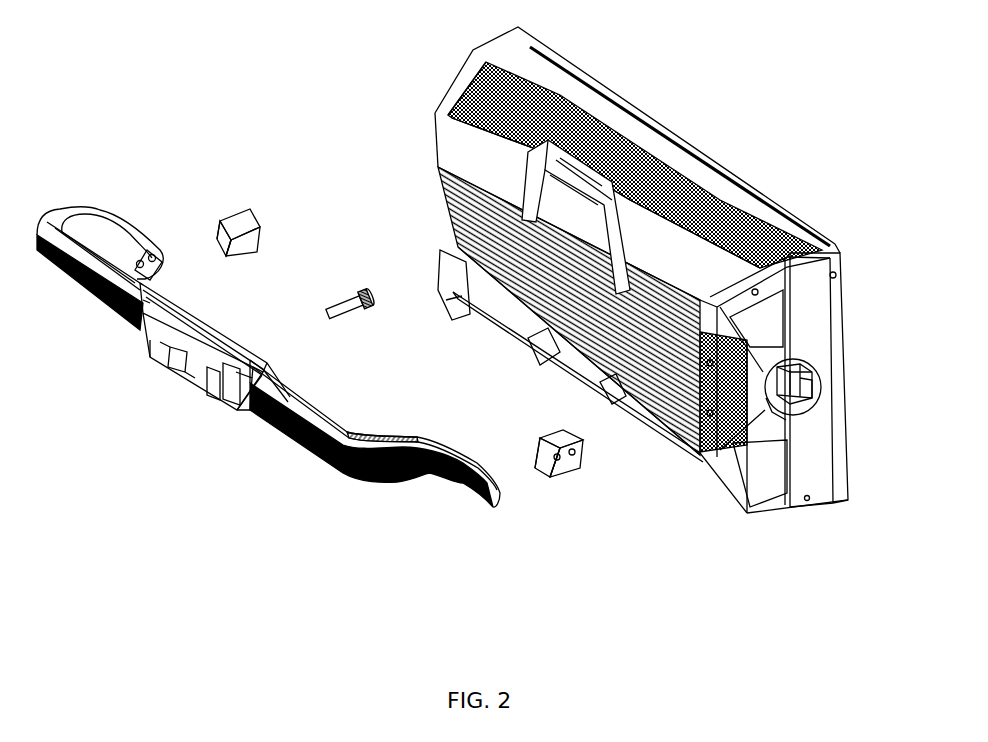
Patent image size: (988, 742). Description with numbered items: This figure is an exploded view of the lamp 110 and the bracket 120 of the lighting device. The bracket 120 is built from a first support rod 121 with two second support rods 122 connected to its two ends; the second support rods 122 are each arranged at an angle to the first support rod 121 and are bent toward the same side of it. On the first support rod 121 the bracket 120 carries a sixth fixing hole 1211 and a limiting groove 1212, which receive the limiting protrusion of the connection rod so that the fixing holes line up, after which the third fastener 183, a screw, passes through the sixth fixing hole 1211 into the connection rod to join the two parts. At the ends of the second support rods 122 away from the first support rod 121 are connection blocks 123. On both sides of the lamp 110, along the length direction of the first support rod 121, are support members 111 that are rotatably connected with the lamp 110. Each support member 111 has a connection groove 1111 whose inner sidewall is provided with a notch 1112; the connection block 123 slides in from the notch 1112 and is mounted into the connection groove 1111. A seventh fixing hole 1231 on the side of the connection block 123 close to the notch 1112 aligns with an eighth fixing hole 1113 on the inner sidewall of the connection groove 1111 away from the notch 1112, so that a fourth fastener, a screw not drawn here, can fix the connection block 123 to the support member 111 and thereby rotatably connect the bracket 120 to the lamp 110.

The lamp 110 is at (653, 140).
The support member 111 is at (803, 360).
The connection groove 1111 is at (801, 409).
The notch 1112 is at (773, 413).
The eighth fixing hole 1113 is at (812, 393).
The bracket 120 is at (321, 368).
The first support rod 121 is at (287, 433).
The sixth fixing hole 1211 is at (172, 368).
The limiting groove 1212 is at (163, 360).
The second support rod 122 is at (100, 230).
The connection block 123 is at (247, 230).
The seventh fixing hole 1231 is at (220, 218).
The third fastener 183 is at (352, 308).